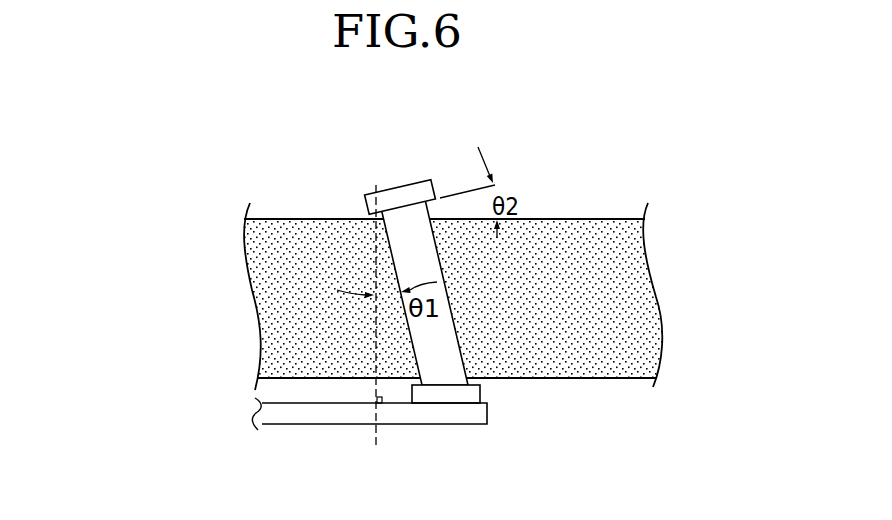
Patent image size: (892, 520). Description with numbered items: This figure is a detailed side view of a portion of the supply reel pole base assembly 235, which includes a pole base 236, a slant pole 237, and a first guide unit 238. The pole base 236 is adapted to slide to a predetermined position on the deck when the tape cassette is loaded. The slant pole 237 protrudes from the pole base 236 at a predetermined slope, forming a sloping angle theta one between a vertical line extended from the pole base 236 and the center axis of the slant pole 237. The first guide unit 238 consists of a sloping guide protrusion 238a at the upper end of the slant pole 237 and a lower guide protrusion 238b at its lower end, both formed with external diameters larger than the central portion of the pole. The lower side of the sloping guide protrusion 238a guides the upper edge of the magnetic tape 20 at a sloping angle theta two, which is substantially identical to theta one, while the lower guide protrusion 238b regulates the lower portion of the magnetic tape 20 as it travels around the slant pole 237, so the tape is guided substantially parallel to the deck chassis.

The magnetic tape 20 is at (637, 315).
The supply reel pole base assembly 235 is at (334, 251).
The pole base 236 is at (315, 417).
The slant pole 237 is at (443, 347).
The first guide unit 238 is at (273, 291).
The sloping guide protrusion 238a is at (386, 212).
The lower guide protrusion 238b is at (422, 395).